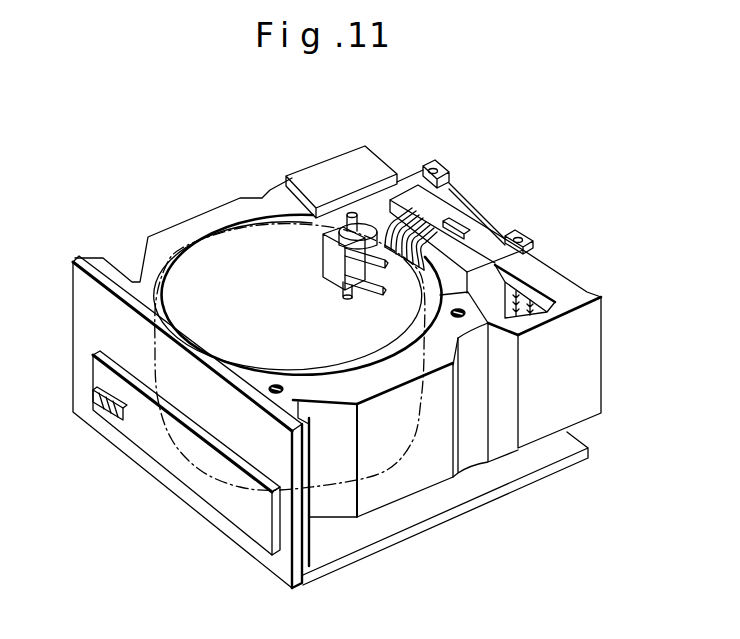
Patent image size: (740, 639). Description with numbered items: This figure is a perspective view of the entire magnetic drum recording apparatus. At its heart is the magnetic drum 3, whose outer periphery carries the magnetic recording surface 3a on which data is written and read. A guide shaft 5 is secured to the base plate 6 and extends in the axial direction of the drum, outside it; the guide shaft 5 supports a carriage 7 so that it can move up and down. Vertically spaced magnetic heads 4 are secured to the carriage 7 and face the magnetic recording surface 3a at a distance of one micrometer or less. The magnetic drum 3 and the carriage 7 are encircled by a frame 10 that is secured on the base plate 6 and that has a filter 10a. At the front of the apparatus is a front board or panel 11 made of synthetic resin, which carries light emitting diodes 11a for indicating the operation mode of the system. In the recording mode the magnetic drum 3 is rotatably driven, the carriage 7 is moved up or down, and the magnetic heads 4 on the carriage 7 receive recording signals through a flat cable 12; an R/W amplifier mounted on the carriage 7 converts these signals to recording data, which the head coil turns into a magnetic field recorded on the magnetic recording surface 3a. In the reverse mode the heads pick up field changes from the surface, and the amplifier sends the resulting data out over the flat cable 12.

The magnetic drum 3 is at (188, 250).
The magnetic recording surface 3a is at (397, 453).
The magnetic heads 4 is at (345, 290).
The guide shaft 5 is at (352, 213).
The base plate 6 is at (527, 480).
The carriage 7 is at (330, 246).
The frame 10 is at (585, 386).
The filter 10a is at (545, 275).
The front board or panel 11 is at (92, 322).
The light emitting diodes 11a is at (107, 415).
The flat cable 12 is at (403, 205).